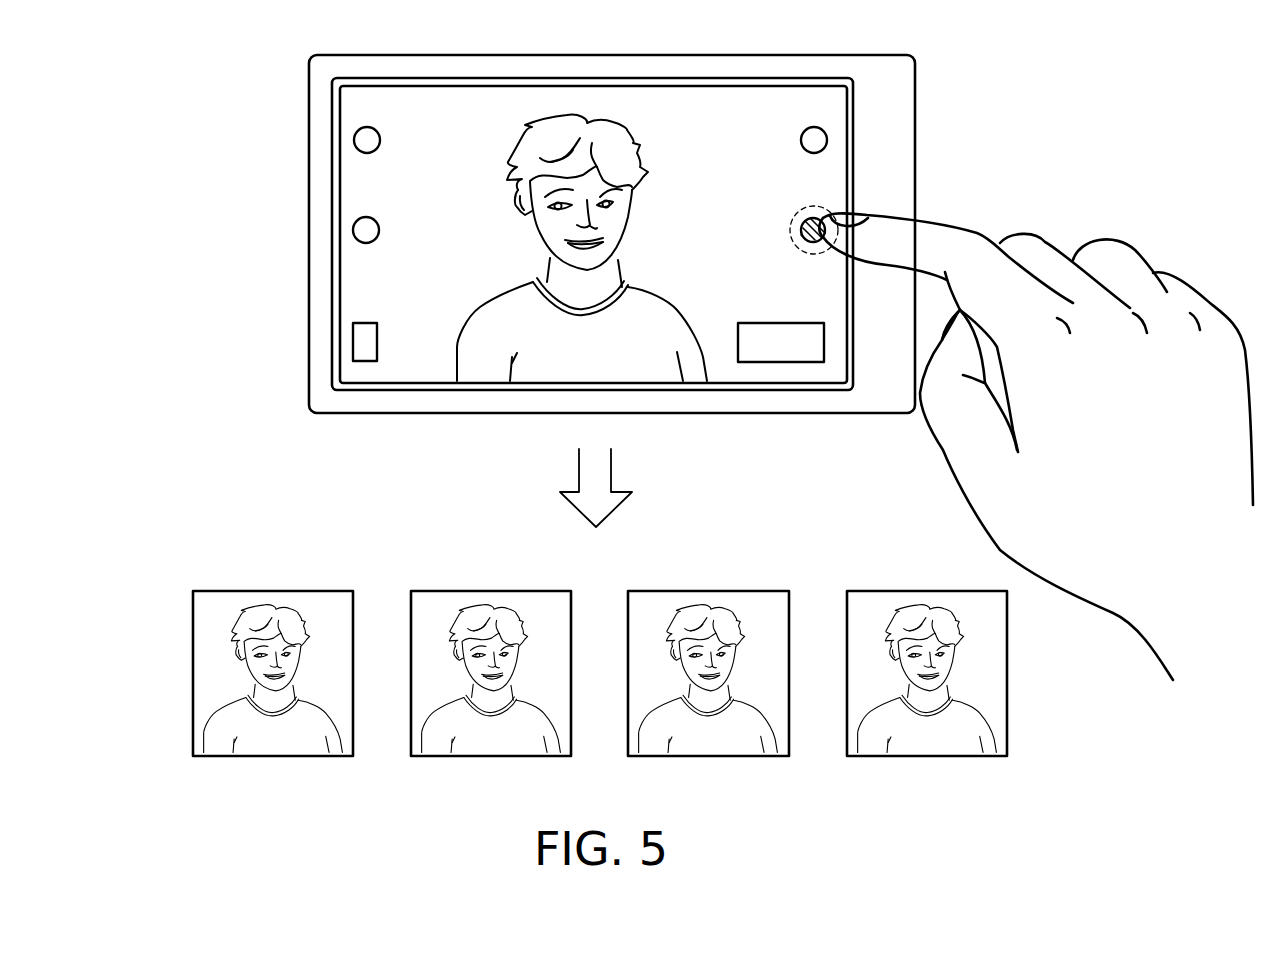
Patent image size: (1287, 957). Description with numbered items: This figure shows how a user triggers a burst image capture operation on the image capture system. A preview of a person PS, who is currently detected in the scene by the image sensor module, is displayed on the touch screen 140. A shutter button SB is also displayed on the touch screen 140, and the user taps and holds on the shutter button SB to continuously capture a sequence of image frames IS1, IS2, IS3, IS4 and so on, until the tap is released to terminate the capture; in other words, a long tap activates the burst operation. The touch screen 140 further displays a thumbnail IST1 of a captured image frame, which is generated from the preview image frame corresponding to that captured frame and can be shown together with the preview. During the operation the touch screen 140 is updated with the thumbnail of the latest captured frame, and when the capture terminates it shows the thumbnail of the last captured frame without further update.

The touch screen 140 is at (870, 55).
The person PS is at (613, 138).
The shutter button SB is at (813, 207).
The thumbnail IST1 is at (781, 342).
The image frame IS1 is at (223, 590).
The image frame IS2 is at (441, 590).
The image frame IS3 is at (658, 590).
The image frame IS4 is at (877, 590).